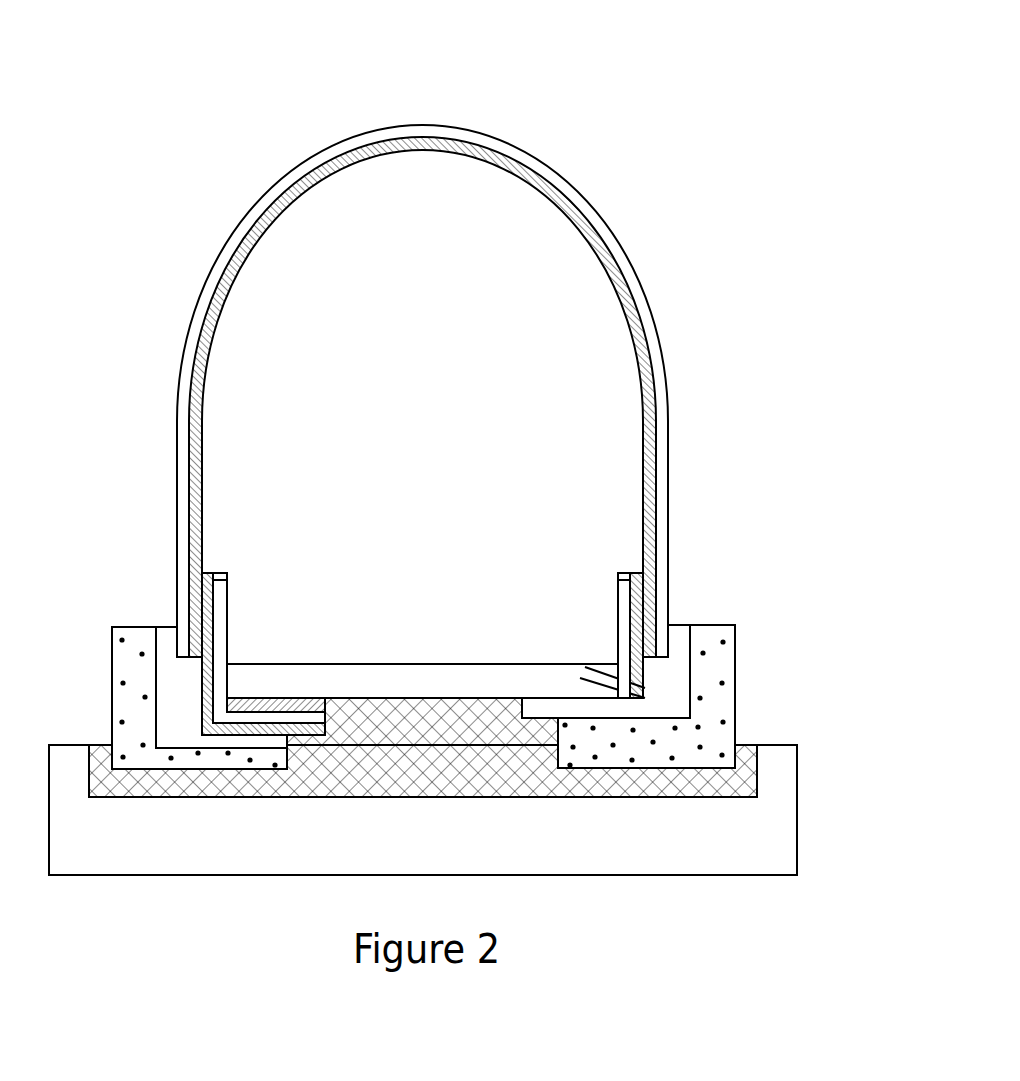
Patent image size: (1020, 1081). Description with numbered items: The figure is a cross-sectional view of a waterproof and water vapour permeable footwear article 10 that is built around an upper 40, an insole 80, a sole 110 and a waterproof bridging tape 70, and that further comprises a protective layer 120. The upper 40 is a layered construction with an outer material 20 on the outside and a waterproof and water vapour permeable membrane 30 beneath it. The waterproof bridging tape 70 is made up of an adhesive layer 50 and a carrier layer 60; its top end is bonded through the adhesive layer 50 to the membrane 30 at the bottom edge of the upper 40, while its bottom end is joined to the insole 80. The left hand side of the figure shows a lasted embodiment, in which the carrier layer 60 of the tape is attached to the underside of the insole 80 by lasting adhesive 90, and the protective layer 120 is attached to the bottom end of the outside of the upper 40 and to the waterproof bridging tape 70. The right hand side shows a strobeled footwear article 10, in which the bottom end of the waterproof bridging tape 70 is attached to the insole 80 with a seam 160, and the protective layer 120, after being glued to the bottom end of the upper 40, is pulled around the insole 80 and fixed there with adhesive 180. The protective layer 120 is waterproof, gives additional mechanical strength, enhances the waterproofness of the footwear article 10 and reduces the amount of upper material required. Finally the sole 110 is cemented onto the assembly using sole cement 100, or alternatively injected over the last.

The footwear article 10 is at (669, 66).
The outer material 20 is at (628, 270).
The waterproof and water vapour permeable membrane 30 is at (632, 312).
The upper 40 is at (742, 232).
The adhesive layer 50 is at (207, 580).
The carrier layer 60 is at (220, 618).
The waterproof bridging tape 70 is at (330, 545).
The insole 80 is at (393, 680).
The lasting adhesive 90 is at (273, 705).
The sole cement 100 is at (742, 775).
The sole 110 is at (758, 847).
The protective layer 120 is at (715, 653).
The seam 160 is at (593, 663).
The adhesive 180 is at (167, 645).